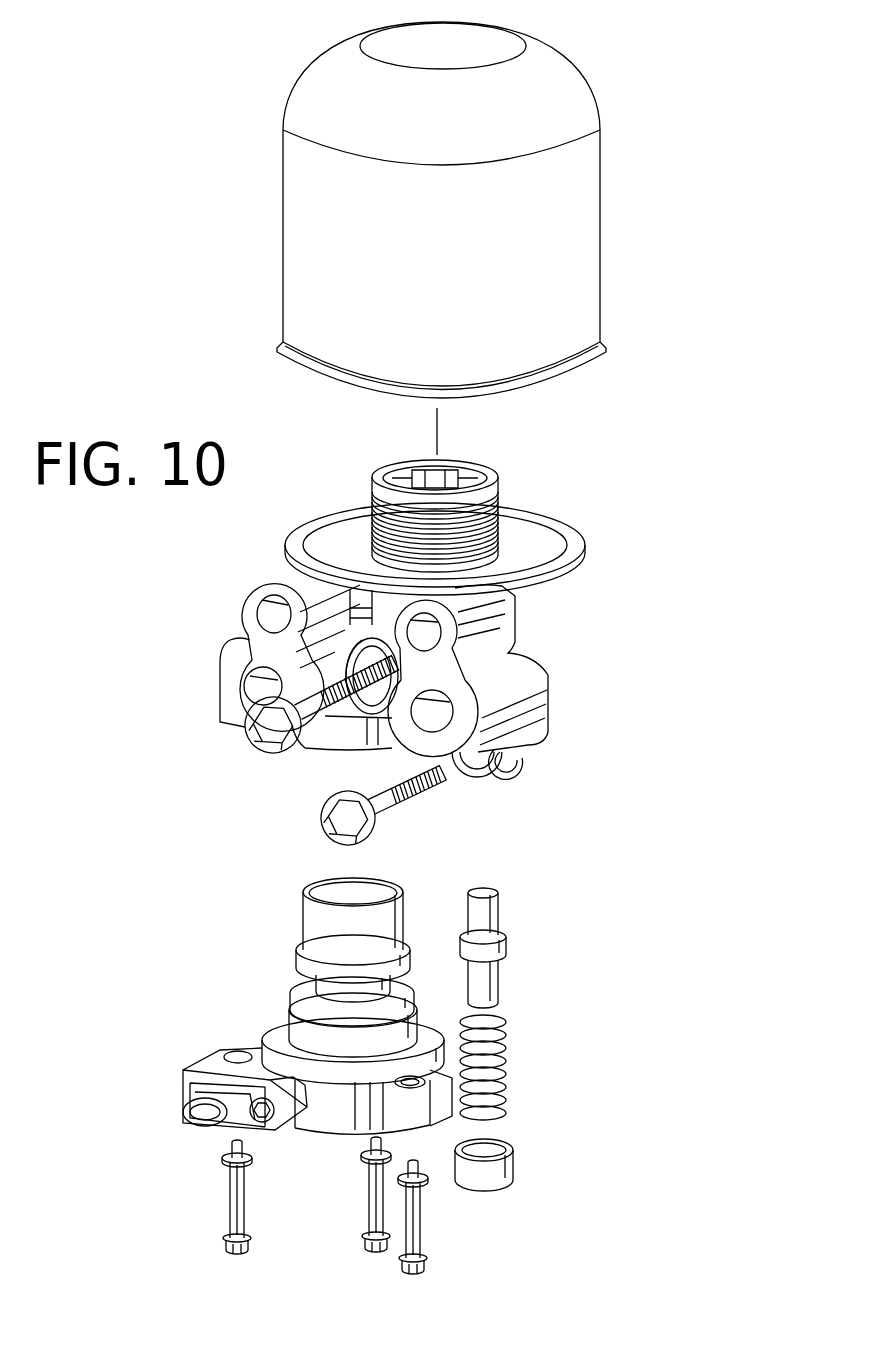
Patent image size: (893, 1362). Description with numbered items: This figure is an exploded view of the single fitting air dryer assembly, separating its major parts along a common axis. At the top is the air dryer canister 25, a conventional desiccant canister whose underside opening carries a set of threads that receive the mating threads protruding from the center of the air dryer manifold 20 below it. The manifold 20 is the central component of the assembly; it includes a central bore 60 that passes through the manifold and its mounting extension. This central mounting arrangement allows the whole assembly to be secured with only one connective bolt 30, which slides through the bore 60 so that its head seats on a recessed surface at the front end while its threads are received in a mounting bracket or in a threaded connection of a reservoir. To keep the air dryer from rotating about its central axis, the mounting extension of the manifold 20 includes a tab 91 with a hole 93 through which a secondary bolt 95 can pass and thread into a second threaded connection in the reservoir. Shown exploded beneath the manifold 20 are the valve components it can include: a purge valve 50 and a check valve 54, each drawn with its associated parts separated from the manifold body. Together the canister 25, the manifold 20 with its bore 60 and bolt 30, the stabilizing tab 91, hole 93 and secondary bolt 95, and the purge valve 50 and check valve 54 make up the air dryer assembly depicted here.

The air dryer canister 25 is at (302, 228).
The air dryer manifold 20 is at (527, 682).
The central bore 60 is at (358, 640).
The bolt 30 is at (253, 733).
The secondary bolt 95 is at (333, 827).
The hole 93 is at (480, 765).
The tab 91 is at (518, 763).
The purge valve 50 is at (182, 1073).
The check valve 54 is at (493, 985).